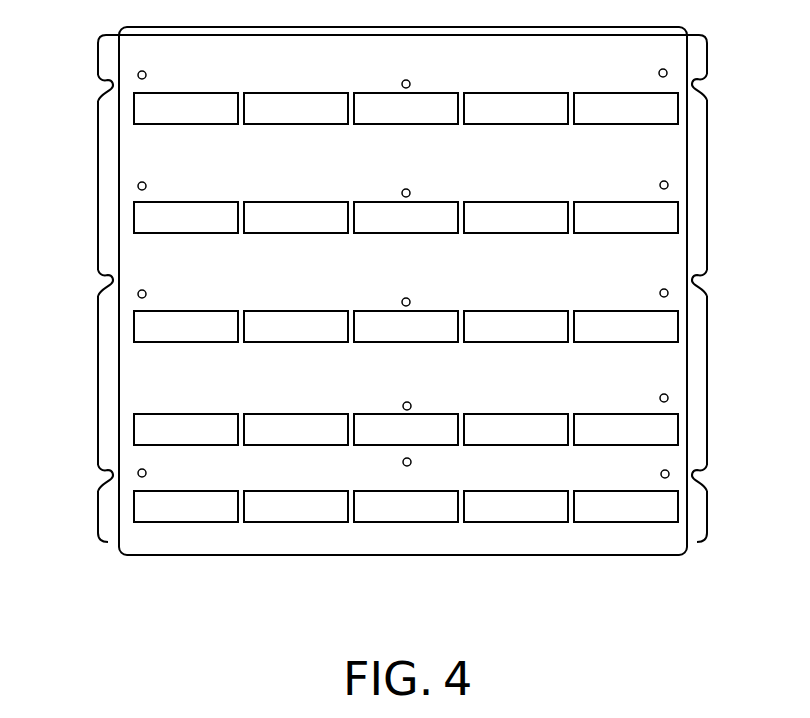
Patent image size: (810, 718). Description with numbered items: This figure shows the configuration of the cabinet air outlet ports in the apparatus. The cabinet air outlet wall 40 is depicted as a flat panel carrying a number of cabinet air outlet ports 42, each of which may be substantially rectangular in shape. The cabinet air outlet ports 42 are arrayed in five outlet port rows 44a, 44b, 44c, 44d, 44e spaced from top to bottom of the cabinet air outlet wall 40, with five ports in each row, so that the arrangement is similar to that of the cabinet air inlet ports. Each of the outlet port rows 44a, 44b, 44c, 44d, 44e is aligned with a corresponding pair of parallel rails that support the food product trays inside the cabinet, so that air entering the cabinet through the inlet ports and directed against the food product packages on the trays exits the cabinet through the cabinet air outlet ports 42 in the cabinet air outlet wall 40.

The cabinet air outlet wall 40 is at (707, 213).
The cabinet air outlet port 42 is at (167, 124).
The outlet port row 44a is at (348, 132).
The outlet port row 44b is at (134, 208).
The outlet port row 44c is at (134, 318).
The outlet port row 44d is at (134, 420).
The outlet port row 44e is at (134, 501).